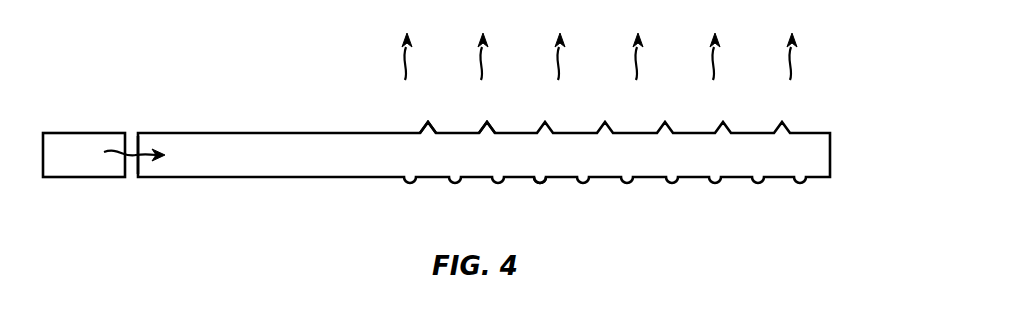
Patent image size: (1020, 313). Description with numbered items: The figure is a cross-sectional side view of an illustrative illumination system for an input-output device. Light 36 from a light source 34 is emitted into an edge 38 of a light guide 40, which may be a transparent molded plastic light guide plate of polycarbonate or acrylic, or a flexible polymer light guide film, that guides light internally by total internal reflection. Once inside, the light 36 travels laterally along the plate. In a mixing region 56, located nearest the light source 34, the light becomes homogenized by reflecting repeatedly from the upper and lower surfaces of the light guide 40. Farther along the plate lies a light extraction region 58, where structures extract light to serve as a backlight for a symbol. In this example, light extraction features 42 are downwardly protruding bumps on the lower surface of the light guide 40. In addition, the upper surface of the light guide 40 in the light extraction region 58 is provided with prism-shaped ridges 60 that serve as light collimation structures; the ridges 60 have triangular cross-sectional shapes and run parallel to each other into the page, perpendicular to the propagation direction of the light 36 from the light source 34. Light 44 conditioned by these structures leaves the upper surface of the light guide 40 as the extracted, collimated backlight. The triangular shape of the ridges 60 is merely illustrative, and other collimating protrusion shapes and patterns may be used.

The light source 34 is at (92, 178).
The light 36 is at (147, 160).
The edge 38 is at (138, 143).
The light guide 40 is at (830, 145).
The light extraction features 42 is at (540, 183).
The light 44 is at (480, 58).
The mixing region 56 is at (138, 112).
The light extraction region 58 is at (835, 110).
The prism-shaped ridges 60 is at (432, 127).